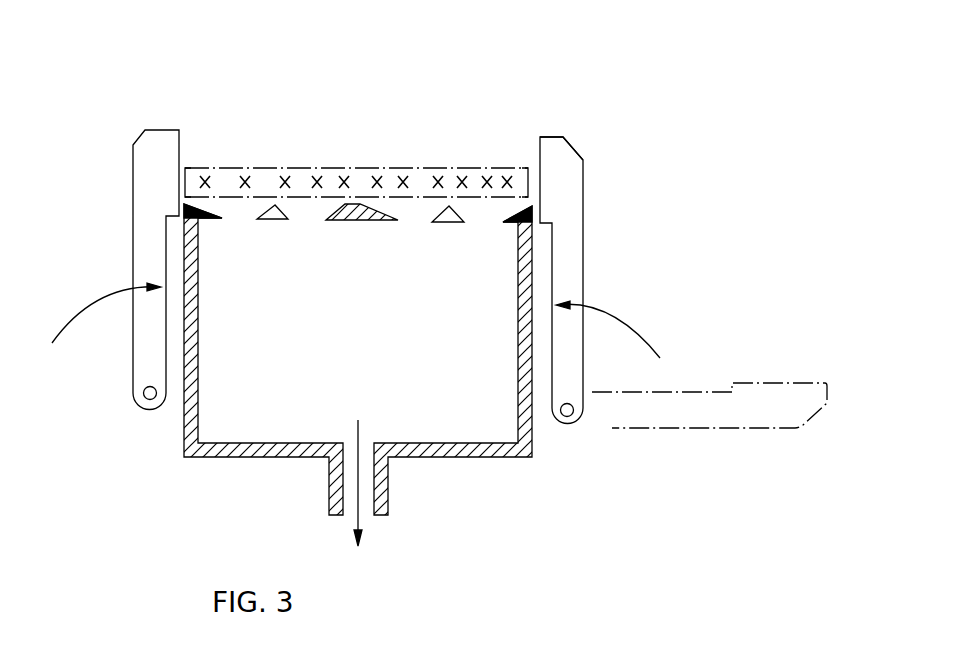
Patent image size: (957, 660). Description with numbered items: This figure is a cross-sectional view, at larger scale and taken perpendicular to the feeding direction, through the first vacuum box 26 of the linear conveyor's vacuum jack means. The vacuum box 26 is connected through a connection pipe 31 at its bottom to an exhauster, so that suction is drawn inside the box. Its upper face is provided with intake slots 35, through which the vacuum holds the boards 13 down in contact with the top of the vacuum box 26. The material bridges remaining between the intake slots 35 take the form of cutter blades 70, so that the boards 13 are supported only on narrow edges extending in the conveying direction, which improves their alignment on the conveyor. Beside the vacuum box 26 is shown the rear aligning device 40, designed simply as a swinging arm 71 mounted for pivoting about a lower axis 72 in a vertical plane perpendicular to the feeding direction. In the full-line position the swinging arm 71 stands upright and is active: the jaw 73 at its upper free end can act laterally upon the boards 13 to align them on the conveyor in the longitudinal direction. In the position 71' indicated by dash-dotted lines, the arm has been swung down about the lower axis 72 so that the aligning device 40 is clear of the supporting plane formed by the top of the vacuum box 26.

The boards 13 is at (494, 168).
The intake slots 35 is at (467, 210).
The cutter blades 70 is at (513, 221).
The first vacuum box 26 is at (180, 453).
The connection pipe 31 is at (363, 490).
The rear aligning device 40 is at (599, 257).
The swinging arm 71 is at (594, 280).
The lower axis 72 is at (574, 409).
The jaw 73 is at (543, 162).
The position of swinging arm 71' is at (709, 431).